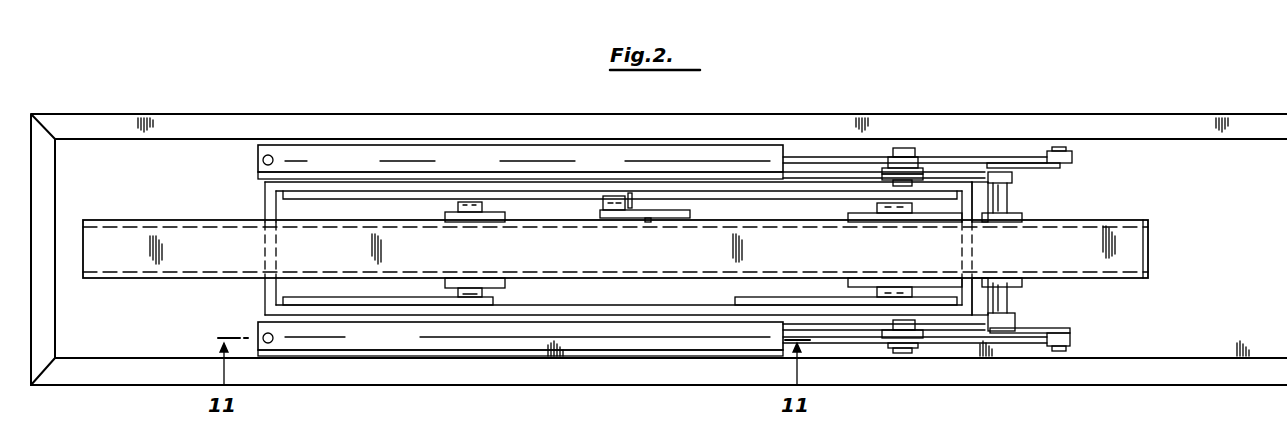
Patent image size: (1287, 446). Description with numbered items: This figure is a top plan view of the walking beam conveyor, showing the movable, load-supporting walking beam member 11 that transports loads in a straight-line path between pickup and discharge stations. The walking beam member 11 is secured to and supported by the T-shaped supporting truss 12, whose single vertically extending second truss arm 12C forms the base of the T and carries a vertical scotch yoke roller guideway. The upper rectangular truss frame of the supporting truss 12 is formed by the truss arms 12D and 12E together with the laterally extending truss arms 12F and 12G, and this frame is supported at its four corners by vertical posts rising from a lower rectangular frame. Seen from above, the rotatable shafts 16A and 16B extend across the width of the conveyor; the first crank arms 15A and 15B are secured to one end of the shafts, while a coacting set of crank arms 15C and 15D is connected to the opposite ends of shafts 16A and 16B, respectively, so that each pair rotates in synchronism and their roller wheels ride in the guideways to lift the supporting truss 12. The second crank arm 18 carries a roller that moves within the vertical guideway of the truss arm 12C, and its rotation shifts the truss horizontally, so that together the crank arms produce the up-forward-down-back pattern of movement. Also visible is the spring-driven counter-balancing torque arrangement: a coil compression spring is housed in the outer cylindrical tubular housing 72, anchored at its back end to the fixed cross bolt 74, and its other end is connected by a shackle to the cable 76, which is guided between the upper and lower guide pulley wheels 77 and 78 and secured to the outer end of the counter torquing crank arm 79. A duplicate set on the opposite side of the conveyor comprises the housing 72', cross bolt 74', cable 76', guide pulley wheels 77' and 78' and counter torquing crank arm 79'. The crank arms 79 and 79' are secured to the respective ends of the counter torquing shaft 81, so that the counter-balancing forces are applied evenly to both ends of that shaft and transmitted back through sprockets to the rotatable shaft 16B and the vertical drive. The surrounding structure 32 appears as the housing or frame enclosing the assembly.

The walking beam member 11 is at (1150, 236).
The supporting truss 12 is at (262, 200).
The second truss arm 12C is at (612, 203).
The truss arm 12D is at (574, 296).
The truss arm 12E is at (362, 191).
The laterally extending truss arm 12F is at (270, 297).
The laterally extending truss arm 12G is at (968, 198).
The crank arm 15A is at (460, 288).
The crank arm 15B is at (878, 290).
The crank arm 15C is at (466, 212).
The crank arm 15D is at (908, 235).
The rotatable shaft 16A is at (466, 202).
The rotatable shaft 16B is at (898, 290).
The second crank arm 18 is at (638, 216).
The housing 32 is at (182, 112).
The tubular housing 72 is at (520, 370).
The tubular housing 72' is at (520, 131).
The cross bolt 74 is at (278, 376).
The cross bolt 74' is at (265, 124).
The cable 76 is at (918, 378).
The cable 76' is at (915, 123).
The upper guide pulley wheel 77 is at (936, 369).
The upper guide pulley wheel 77' is at (923, 125).
The lower guide pulley wheel 78 is at (902, 341).
The lower guide pulley wheel 78' is at (902, 177).
The counter torquing crank arm 79 is at (1046, 317).
The counter torquing crank arm 79' is at (1058, 162).
The counter torquing shaft 81 is at (1006, 294).